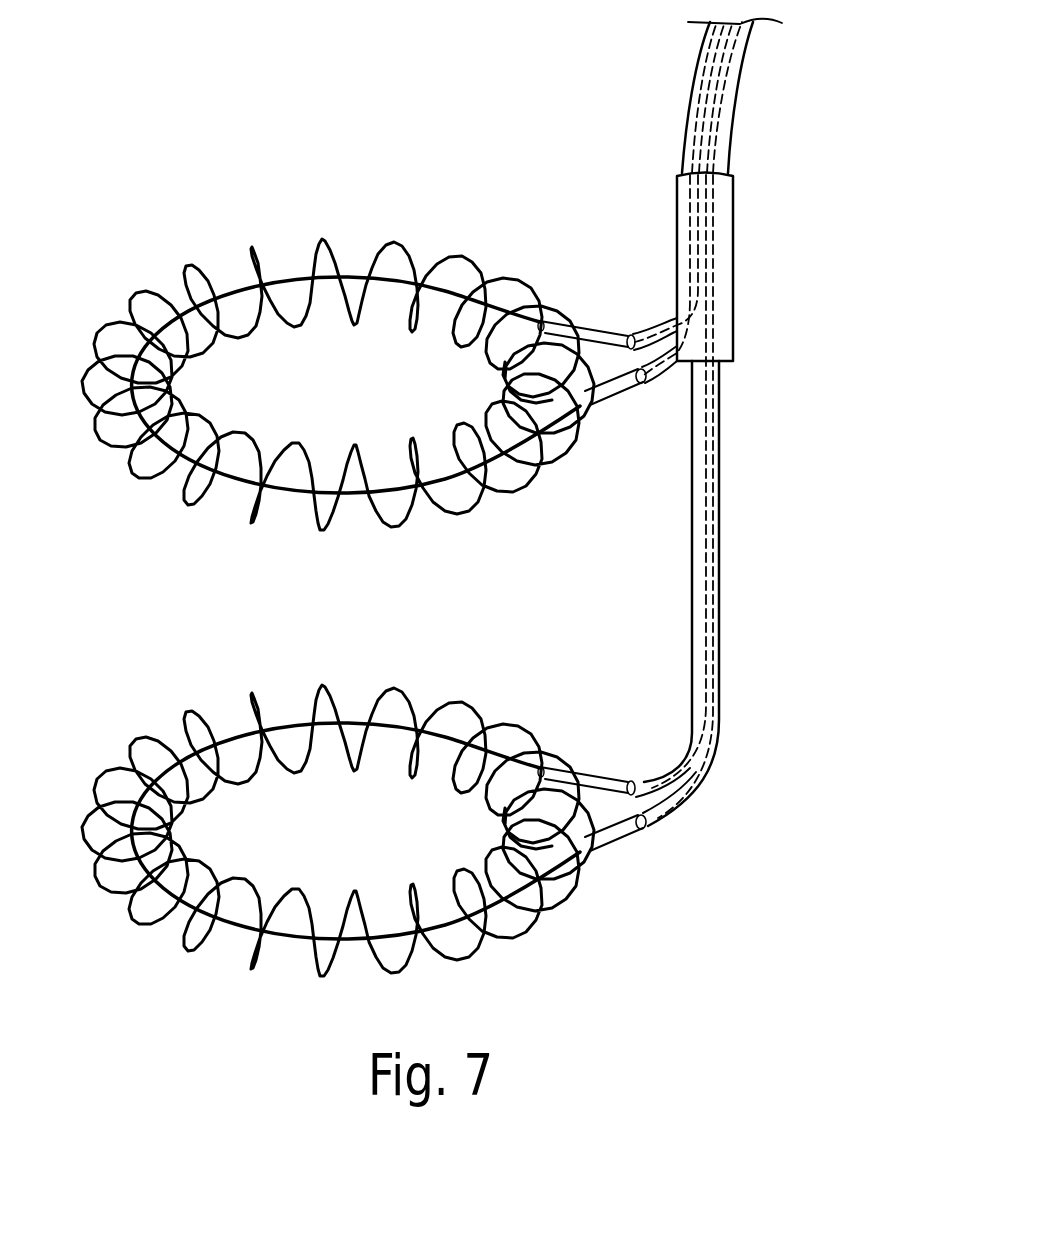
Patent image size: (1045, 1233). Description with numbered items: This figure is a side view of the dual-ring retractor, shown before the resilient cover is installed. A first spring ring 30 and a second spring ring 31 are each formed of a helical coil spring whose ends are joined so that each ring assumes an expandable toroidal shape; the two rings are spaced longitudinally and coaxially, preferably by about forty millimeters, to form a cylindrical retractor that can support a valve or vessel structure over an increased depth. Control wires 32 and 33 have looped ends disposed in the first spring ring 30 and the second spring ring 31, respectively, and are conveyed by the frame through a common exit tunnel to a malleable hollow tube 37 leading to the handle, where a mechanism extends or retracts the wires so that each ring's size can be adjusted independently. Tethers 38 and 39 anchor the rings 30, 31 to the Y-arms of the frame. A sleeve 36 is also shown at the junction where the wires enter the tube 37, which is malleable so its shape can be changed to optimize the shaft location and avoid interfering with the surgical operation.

The first spring ring 30 is at (408, 248).
The second spring ring 31 is at (414, 690).
The control wire 32 is at (282, 272).
The control wire 33 is at (287, 722).
The sleeve 36 is at (733, 255).
The malleable hollow tube 37 is at (728, 112).
The tether 38 is at (593, 315).
The tether 39 is at (610, 402).